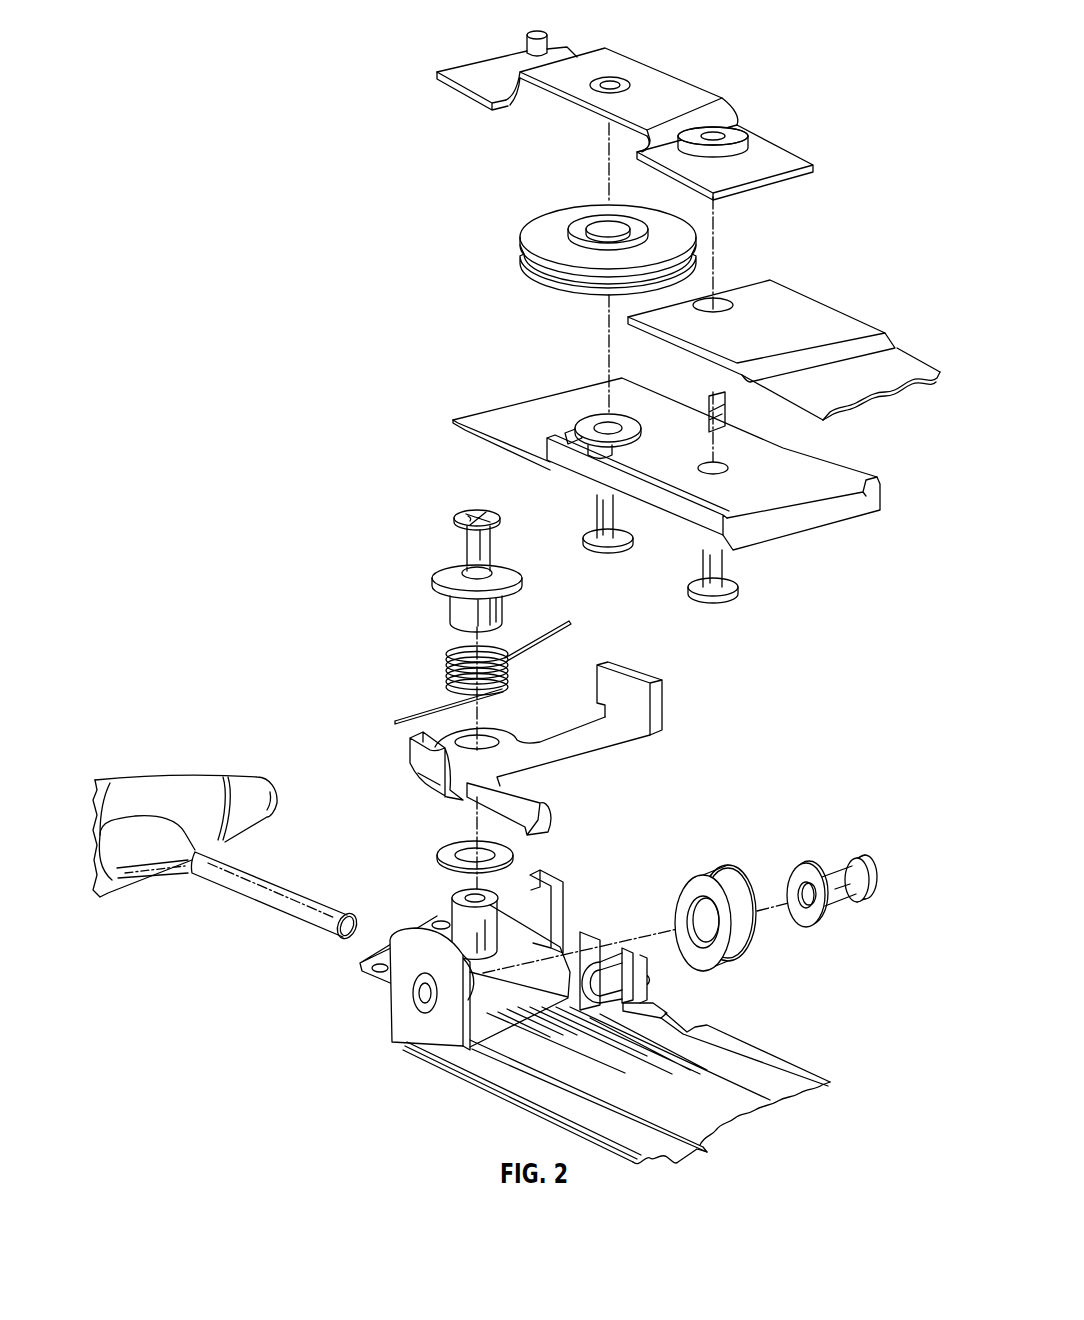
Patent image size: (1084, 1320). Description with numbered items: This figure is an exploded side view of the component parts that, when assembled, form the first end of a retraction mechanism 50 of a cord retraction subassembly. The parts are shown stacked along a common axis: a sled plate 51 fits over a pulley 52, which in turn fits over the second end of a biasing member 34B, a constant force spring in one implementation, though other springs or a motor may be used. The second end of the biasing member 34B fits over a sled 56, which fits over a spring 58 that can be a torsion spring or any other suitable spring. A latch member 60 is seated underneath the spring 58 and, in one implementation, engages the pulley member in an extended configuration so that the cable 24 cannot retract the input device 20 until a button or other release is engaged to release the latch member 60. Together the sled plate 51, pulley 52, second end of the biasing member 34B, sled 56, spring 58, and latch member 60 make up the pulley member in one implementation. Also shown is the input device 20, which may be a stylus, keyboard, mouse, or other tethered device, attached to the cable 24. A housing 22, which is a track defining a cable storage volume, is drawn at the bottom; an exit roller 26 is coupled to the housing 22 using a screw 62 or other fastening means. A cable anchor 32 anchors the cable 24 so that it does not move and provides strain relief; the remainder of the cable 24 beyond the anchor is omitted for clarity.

The retraction mechanism 50 is at (250, 199).
The sled plate 51 is at (680, 102).
The pulley 52 is at (532, 232).
The second end of biasing member 34B is at (822, 325).
The sled 56 is at (803, 527).
The spring 58 is at (440, 669).
The latch member 60 is at (655, 740).
The input device 20 is at (158, 783).
The cable 24 is at (252, 893).
The housing 22 is at (460, 1087).
The cable anchor 32 is at (600, 968).
The exit roller 26 is at (703, 873).
The screw 62 is at (828, 876).